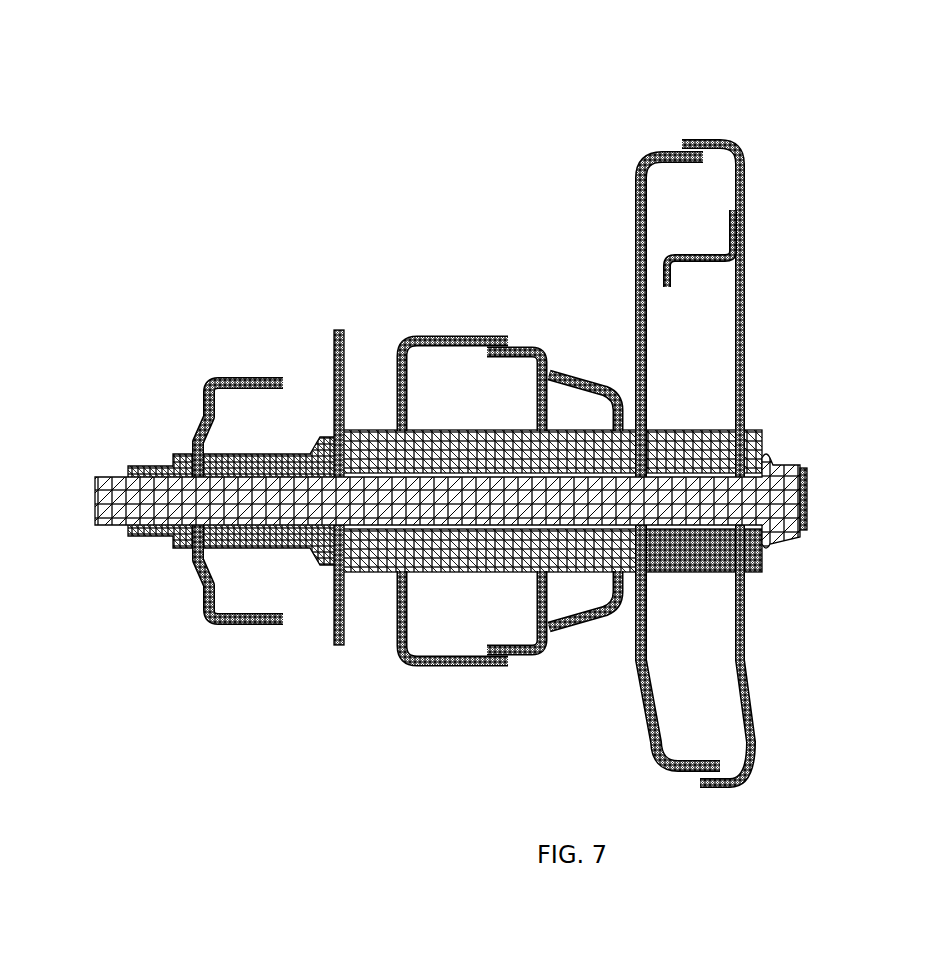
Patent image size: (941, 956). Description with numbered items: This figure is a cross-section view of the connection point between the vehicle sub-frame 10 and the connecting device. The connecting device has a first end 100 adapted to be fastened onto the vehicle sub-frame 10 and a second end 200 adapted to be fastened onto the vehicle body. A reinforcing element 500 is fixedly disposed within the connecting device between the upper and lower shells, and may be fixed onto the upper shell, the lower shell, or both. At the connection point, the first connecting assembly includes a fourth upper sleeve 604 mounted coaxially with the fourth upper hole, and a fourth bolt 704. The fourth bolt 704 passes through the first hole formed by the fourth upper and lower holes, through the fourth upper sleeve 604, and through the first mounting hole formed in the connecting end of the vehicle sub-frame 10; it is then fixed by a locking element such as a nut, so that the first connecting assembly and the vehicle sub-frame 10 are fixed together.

The vehicle sub-frame 10 is at (415, 662).
The first end 100 is at (745, 172).
The second end 200 is at (633, 175).
The reinforcing element 500 is at (663, 258).
The fourth upper sleeve 604 is at (743, 582).
The fourth bolt 704 is at (802, 468).